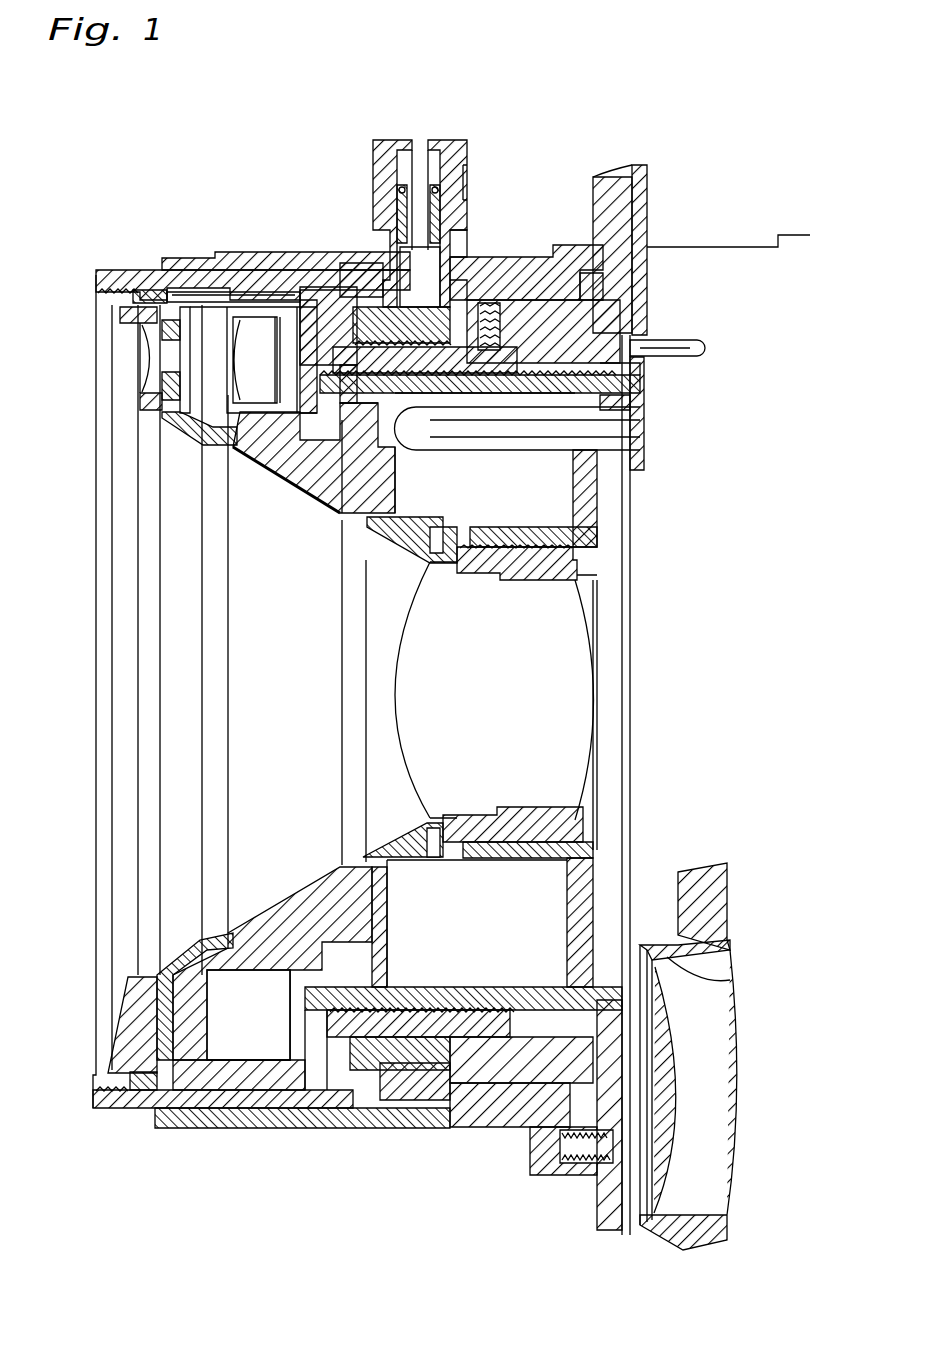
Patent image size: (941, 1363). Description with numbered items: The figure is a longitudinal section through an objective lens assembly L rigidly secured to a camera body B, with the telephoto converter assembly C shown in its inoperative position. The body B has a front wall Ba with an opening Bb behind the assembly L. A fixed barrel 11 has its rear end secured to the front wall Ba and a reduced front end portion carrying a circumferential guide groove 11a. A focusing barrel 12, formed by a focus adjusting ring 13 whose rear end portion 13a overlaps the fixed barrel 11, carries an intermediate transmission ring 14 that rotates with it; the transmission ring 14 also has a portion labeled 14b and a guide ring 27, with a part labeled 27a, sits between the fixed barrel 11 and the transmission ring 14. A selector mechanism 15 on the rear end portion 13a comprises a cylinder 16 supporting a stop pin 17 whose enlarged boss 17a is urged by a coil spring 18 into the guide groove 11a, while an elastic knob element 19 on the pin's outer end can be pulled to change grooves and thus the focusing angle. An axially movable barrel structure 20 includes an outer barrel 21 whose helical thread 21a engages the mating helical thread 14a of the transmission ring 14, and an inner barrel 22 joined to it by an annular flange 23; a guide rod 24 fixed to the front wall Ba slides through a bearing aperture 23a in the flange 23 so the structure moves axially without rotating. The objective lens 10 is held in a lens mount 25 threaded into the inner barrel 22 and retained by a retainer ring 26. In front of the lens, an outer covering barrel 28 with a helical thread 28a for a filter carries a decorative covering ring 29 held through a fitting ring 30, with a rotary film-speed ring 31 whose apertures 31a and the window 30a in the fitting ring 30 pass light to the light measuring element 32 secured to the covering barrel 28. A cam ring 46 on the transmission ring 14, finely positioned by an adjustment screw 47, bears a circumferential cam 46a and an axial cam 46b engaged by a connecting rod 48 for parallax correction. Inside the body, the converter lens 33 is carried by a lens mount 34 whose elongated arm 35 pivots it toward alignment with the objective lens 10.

The objective lens 10 is at (494, 691).
The fixed barrel 11 is at (575, 243).
The guide groove 11a is at (458, 287).
The focusing barrel 12 is at (262, 270).
The focus adjusting ring 13 is at (192, 258).
The rear end portion 13a is at (425, 1127).
The intermediate transmission ring 14 is at (445, 372).
The helical thread 14a is at (283, 465).
The holder wall 14b is at (355, 400).
The selector mechanism 15 is at (368, 124).
The cylinder 16 is at (470, 177).
The stop pin 17 is at (418, 215).
The boss 17a is at (405, 265).
The coil spring 18 is at (455, 165).
The elastic knob element 19 is at (433, 140).
The axially movable barrel structure 20 is at (557, 966).
The outer barrel 21 is at (560, 388).
The helical thread 21a is at (590, 375).
The inner barrel 22 is at (510, 857).
The annular flange 23 is at (580, 875).
The bearing aperture 23a is at (635, 455).
The guide rod 24 is at (612, 430).
The lens mount 25 is at (550, 565).
The retainer ring 26 is at (430, 545).
The guide ring 27 is at (300, 297).
The channel block 27a is at (358, 325).
The outer covering barrel 28 is at (130, 1110).
The helical thread 28a is at (142, 1092).
The outer decorative covering ring 29 is at (285, 905).
The fitting ring 30 is at (140, 1020).
The window 30a is at (140, 330).
The rotary ring 31 is at (180, 945).
The aperture 31a is at (168, 348).
The light measuring element 32 is at (250, 365).
The converter lens 33 is at (688, 1100).
The lens mount 34 is at (705, 960).
The elongated arm 35 is at (720, 880).
The cam ring 46 is at (522, 380).
The circumferential cam 46a is at (620, 300).
The axial cam 46b is at (625, 330).
The adjustment screw 47 is at (540, 270).
The connecting rod 48 is at (680, 350).
The camera body B is at (660, 228).
The front wall Ba is at (607, 1195).
The opening Bb is at (640, 492).
The telephoto converter assembly C is at (748, 933).
The objective lens assembly L is at (303, 1160).